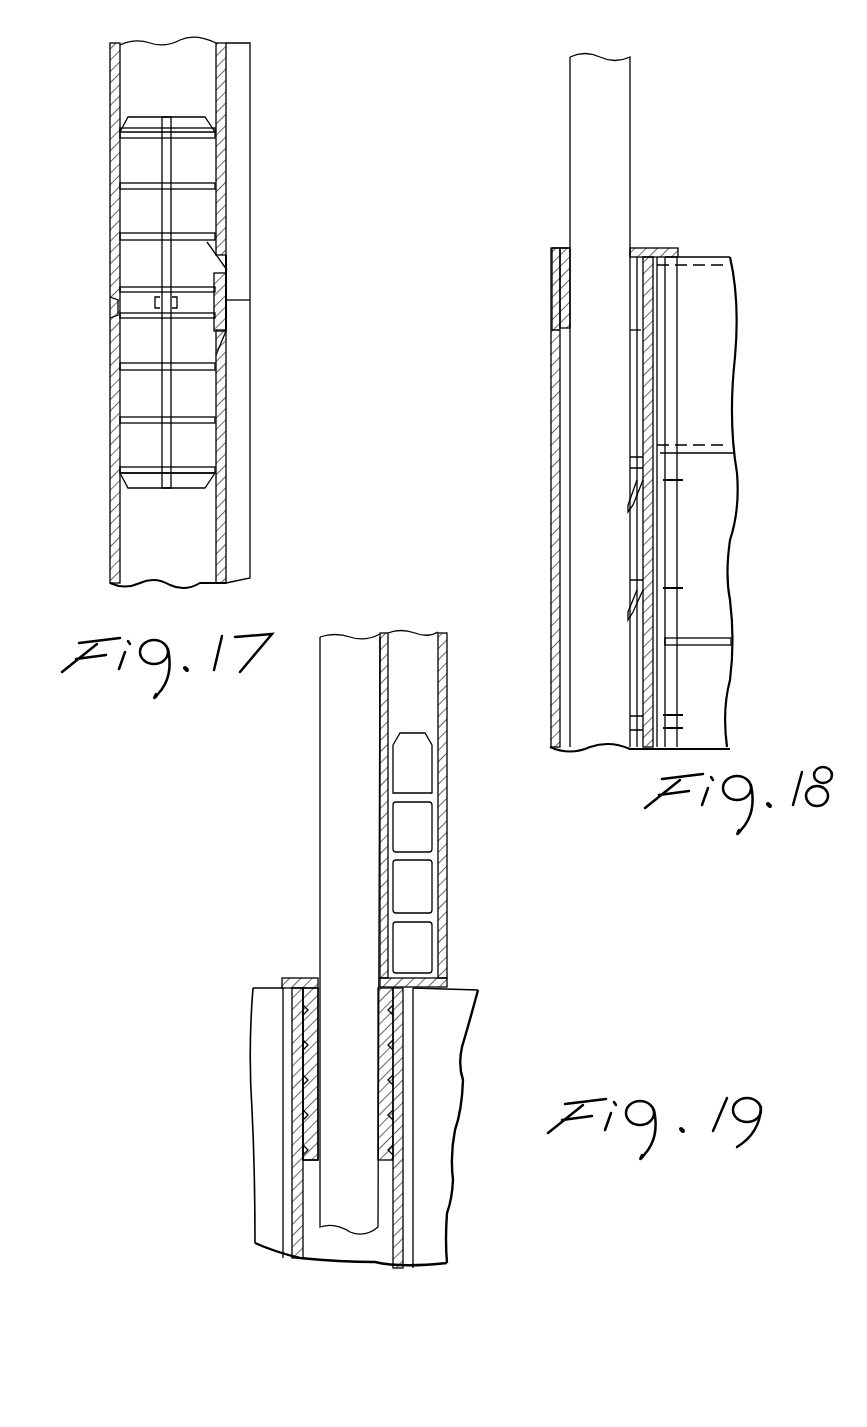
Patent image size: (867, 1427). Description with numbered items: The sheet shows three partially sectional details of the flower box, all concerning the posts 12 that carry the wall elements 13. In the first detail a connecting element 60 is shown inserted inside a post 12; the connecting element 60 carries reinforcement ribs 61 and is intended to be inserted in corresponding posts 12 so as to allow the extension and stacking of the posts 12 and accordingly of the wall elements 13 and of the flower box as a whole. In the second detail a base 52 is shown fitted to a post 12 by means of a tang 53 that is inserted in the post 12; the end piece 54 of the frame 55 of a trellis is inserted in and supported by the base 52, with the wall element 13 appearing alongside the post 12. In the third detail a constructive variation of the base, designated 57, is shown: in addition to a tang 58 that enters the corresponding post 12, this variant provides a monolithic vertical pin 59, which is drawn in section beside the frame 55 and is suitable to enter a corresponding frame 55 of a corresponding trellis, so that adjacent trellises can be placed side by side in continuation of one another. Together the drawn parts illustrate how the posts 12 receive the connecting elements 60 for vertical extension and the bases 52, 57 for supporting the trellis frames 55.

In FIG. 17, the post 12 is at (110, 183).
In FIG. 18, the post 12 is at (550, 545).
In FIG. 19, the post 12 is at (292, 1185).
In FIG. 18, the wall element 13 is at (695, 506).
In FIG. 18, the base 52 is at (562, 248).
In FIG. 18, the tang 53 is at (552, 303).
In FIG. 18, the end piece 54 is at (680, 362).
In FIG. 18, the frame 55 is at (655, 180).
In FIG. 19, the frame 55 is at (447, 678).
In FIG. 19, the constructive variation of the base 57 is at (295, 960).
In FIG. 19, the tang 58 is at (310, 1060).
In FIG. 19, the monolithic vertical pin 59 is at (415, 827).
In FIG. 17, the connecting element 60 is at (200, 388).
In FIG. 17, the reinforcement rib 61 is at (145, 318).